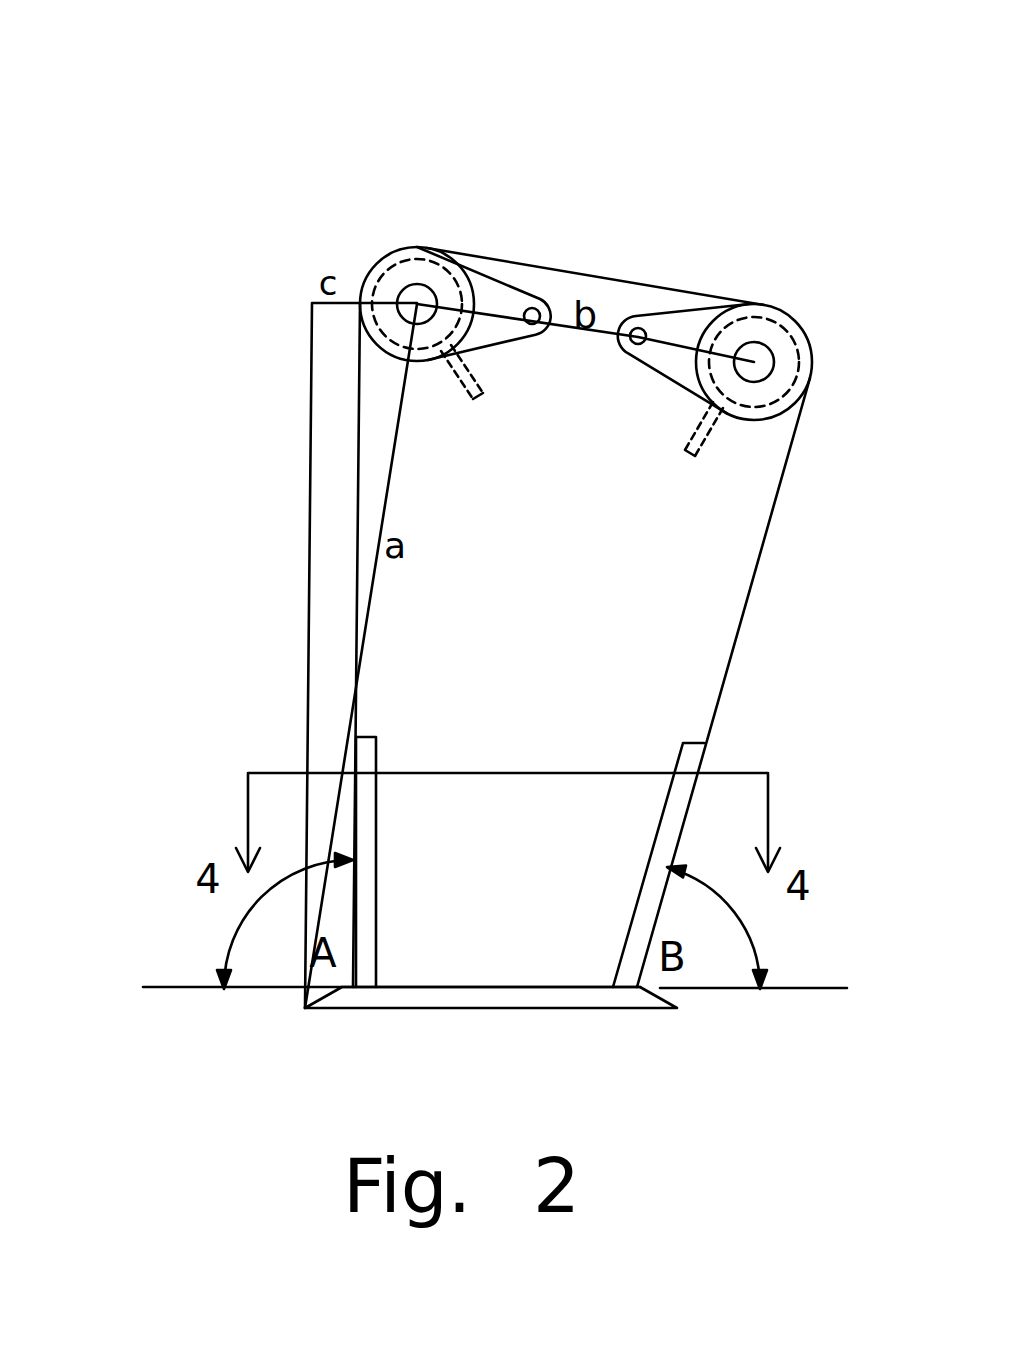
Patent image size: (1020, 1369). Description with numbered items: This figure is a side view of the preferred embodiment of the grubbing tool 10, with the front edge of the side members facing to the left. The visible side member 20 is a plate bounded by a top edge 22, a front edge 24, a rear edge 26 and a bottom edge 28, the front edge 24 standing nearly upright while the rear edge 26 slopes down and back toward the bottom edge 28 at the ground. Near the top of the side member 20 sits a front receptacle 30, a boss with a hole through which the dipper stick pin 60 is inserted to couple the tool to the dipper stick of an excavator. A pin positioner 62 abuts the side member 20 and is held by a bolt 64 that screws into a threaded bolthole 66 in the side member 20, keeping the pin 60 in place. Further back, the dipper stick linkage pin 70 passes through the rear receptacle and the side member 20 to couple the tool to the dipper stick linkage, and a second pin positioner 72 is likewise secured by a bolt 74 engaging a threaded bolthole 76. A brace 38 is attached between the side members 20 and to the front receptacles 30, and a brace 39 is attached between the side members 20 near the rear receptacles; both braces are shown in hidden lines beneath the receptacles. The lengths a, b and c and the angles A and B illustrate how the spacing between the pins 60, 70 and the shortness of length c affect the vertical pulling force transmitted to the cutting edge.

The grubbing tool 10 is at (182, 211).
The side member 20 is at (537, 655).
The top edge 22 is at (585, 273).
The front edge 24 is at (355, 495).
The rear edge 26 is at (738, 627).
The bottom edge 28 is at (475, 987).
The front receptacle 30 is at (405, 272).
The brace 38 is at (458, 402).
The brace 39 is at (707, 418).
The dipper stick pin 60 is at (410, 306).
The pin positioner 62 is at (490, 305).
The bolt 64 is at (537, 225).
The threaded bolthole 66 is at (533, 310).
The dipper stick linkage pin 70 is at (756, 360).
The second pin positioner 72 is at (678, 337).
The bolt 74 is at (674, 264).
The threaded bolthole 76 is at (638, 330).